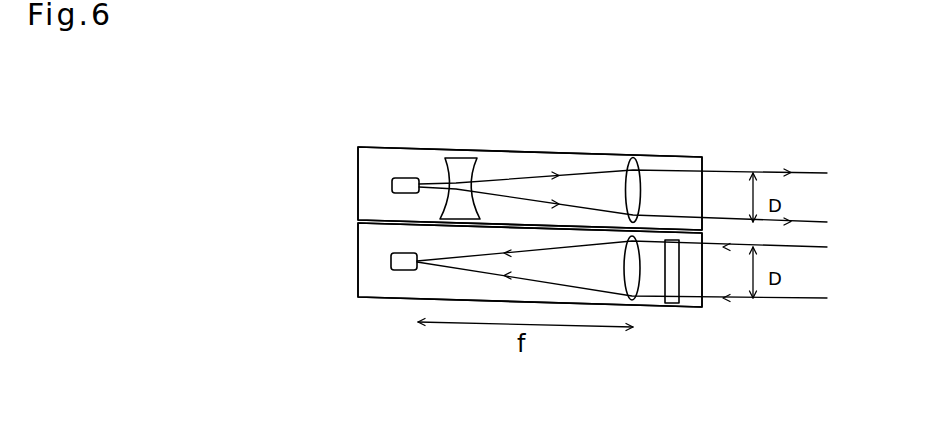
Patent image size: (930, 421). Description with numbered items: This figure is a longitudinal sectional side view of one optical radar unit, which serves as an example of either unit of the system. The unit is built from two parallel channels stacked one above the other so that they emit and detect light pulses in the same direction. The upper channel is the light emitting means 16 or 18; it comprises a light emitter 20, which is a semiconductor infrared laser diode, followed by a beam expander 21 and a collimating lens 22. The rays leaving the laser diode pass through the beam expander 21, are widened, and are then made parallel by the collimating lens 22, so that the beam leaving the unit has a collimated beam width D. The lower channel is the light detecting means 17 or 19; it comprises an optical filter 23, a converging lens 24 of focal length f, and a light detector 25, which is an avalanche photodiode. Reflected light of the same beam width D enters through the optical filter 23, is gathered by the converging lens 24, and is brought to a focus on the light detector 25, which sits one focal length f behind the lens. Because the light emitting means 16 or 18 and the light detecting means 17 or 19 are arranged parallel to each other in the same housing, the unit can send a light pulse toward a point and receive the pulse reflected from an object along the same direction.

The light emitting means 16 is at (358, 178).
The light emitting means 18 is at (358, 178).
The light detecting means 17 is at (358, 277).
The light detecting means 19 is at (358, 277).
The light emitter 20 is at (408, 177).
The beam expander 21 is at (468, 158).
The collimating lens 22 is at (633, 158).
The optical filter 23 is at (675, 305).
The converging lens 24 is at (632, 300).
The light detector 25 is at (408, 270).